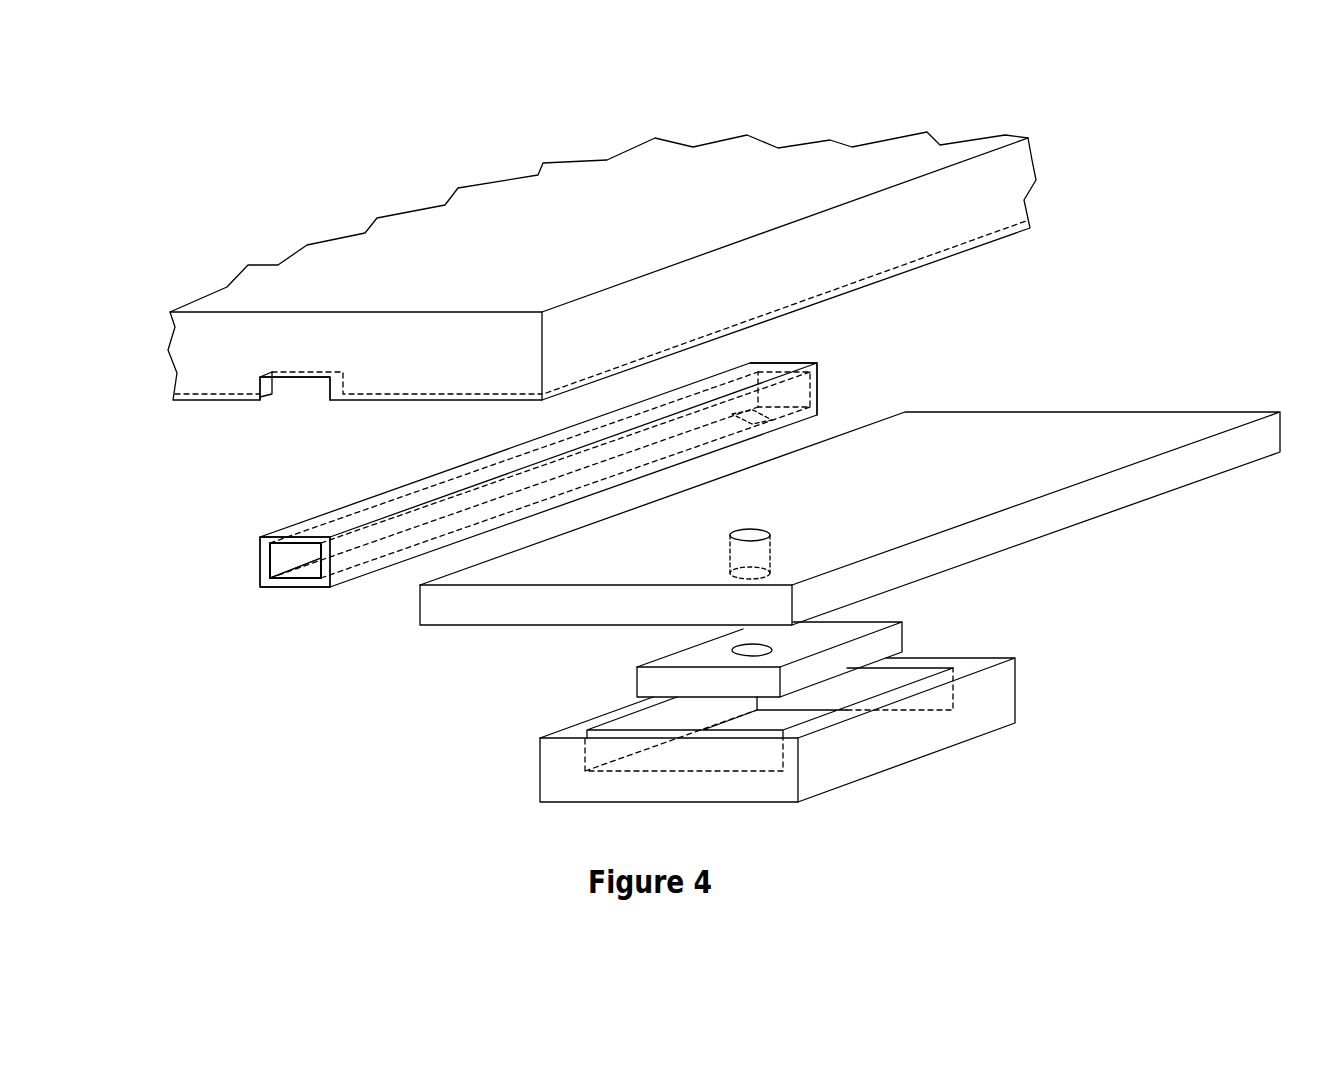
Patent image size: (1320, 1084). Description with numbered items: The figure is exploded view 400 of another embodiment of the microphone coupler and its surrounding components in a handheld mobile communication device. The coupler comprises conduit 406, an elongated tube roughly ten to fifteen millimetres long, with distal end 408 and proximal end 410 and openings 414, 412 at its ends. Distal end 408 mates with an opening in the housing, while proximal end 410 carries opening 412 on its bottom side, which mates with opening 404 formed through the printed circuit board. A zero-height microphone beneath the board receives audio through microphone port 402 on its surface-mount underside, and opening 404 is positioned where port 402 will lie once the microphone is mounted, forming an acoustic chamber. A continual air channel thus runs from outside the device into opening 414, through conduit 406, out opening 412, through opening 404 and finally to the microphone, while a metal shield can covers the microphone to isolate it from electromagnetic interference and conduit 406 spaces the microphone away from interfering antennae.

The view 400 is at (305, 742).
The distal end 408 is at (283, 555).
The opening 414 is at (313, 575).
The conduit 406 is at (768, 372).
The proximal end 410 is at (797, 390).
The opening 412 is at (753, 423).
The opening 404 is at (757, 528).
The microphone port 402 is at (745, 647).